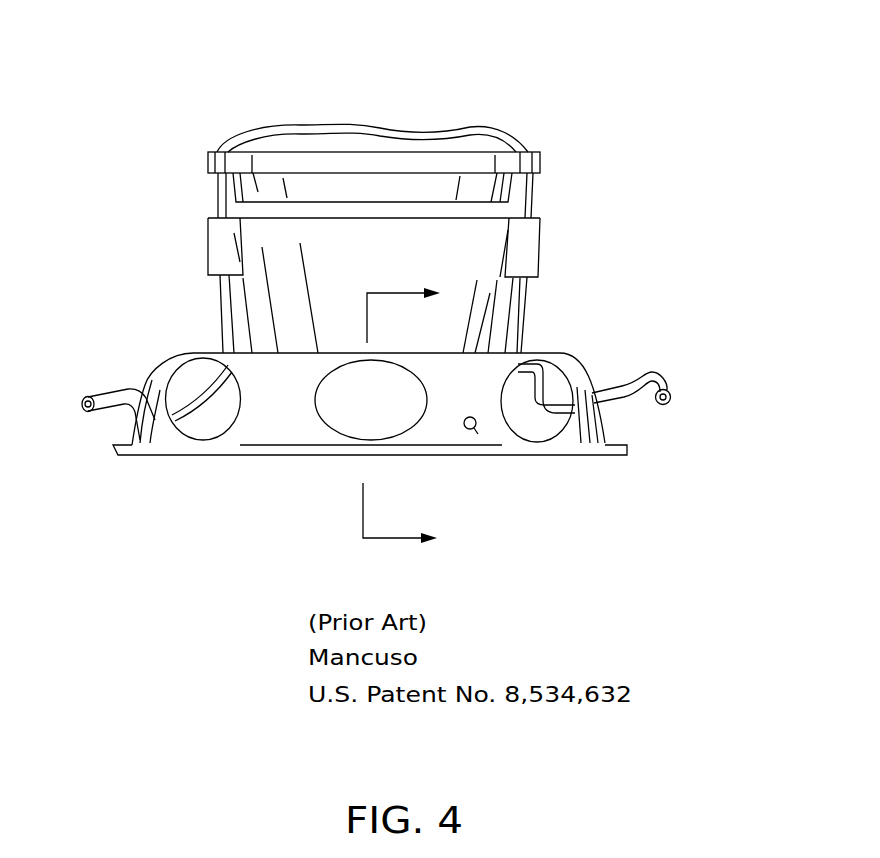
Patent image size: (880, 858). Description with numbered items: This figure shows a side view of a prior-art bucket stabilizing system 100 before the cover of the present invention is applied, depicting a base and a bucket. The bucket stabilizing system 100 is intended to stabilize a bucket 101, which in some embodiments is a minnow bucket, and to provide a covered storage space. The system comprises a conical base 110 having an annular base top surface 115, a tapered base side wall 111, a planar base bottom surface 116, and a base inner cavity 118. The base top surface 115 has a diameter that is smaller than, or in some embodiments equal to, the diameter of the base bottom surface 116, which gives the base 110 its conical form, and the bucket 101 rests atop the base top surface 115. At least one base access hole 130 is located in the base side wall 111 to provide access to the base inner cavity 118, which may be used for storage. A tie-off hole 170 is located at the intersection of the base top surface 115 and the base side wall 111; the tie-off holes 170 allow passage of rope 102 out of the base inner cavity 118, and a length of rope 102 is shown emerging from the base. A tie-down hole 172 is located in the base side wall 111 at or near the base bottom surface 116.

The bucket stabilizing system 100 is at (656, 98).
The bucket 101 is at (287, 252).
The rope 102 is at (525, 298).
The conical base 110 is at (130, 425).
The tapered base side wall 111 is at (125, 397).
The annular base top surface 115 is at (210, 350).
The planar base bottom surface 116 is at (118, 455).
The base inner cavity 118 is at (349, 417).
The base access hole 130 is at (545, 425).
The tie-off hole 170 is at (618, 405).
The tie-down hole 172 is at (478, 434).